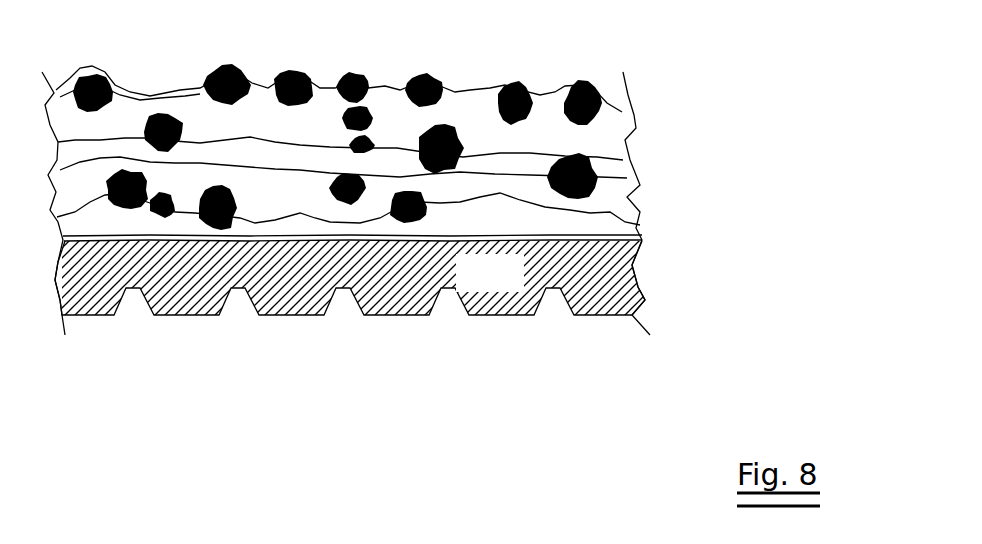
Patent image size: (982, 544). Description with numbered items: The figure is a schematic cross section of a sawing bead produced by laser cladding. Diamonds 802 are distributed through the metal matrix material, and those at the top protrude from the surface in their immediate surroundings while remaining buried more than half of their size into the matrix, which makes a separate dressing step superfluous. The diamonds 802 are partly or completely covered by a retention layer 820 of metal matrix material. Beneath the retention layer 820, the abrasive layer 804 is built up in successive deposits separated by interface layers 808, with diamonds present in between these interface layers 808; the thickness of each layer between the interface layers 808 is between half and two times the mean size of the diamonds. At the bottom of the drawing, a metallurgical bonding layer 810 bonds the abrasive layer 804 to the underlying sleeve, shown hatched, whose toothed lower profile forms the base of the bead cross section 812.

The diamonds 802 is at (337, 129).
The retention layer 820 is at (373, 94).
The interface layers 808 is at (407, 151).
The abrasive layer 804 is at (537, 232).
The metallurgical bonding layer 810 is at (408, 262).
The substrate 812 is at (518, 287).